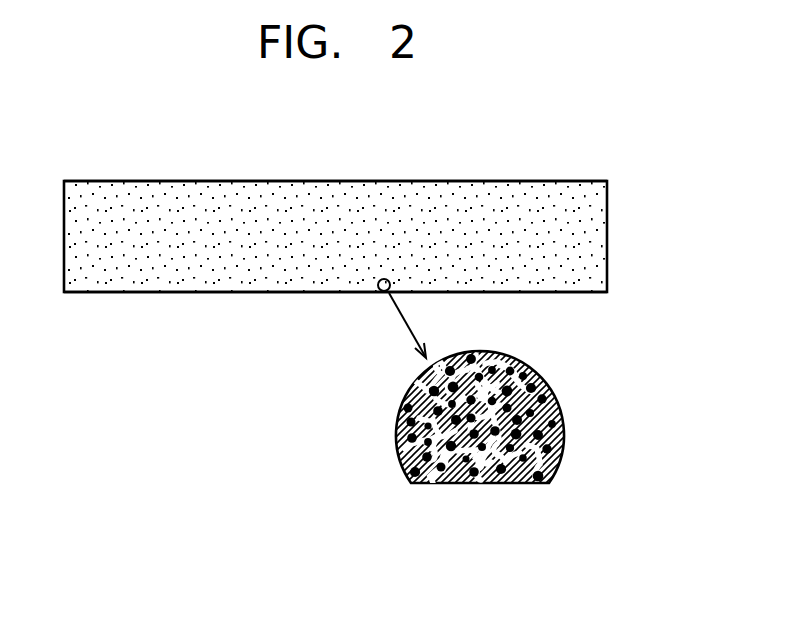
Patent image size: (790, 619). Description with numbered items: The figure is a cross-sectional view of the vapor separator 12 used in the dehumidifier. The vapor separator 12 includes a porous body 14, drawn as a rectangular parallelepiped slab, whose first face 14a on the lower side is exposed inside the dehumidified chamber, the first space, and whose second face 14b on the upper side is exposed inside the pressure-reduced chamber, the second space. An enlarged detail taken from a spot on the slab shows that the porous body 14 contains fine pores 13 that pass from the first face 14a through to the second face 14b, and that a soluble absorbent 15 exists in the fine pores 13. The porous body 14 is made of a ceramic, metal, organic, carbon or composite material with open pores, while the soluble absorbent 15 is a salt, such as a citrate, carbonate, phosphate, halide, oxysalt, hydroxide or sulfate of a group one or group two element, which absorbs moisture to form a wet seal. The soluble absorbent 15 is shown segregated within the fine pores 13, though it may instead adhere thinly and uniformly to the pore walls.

The vapor separator 12 is at (487, 149).
The fine pores 13 is at (468, 484).
The porous body 14 is at (607, 224).
The first face 14a is at (184, 292).
The second face 14b is at (185, 181).
The soluble absorbent 15 is at (510, 484).